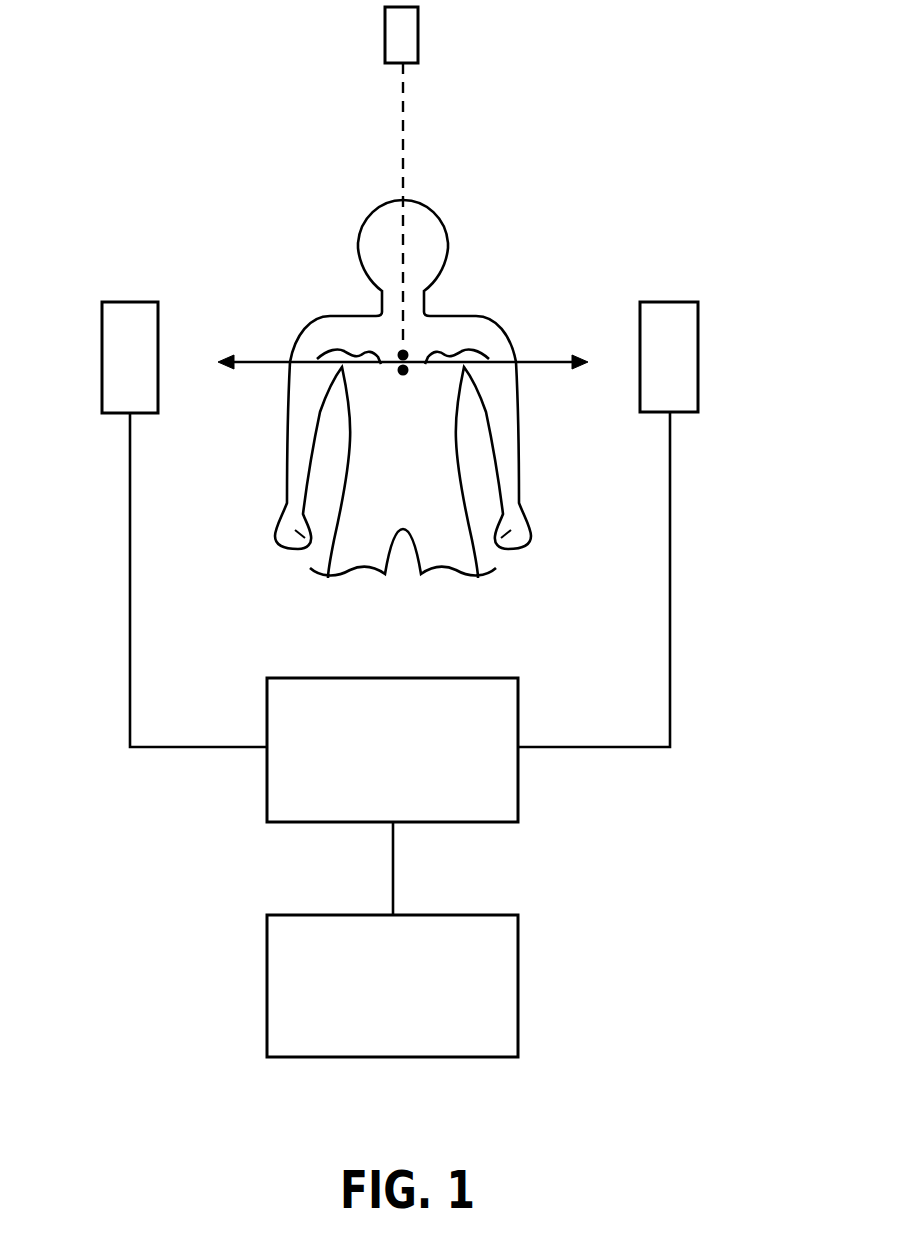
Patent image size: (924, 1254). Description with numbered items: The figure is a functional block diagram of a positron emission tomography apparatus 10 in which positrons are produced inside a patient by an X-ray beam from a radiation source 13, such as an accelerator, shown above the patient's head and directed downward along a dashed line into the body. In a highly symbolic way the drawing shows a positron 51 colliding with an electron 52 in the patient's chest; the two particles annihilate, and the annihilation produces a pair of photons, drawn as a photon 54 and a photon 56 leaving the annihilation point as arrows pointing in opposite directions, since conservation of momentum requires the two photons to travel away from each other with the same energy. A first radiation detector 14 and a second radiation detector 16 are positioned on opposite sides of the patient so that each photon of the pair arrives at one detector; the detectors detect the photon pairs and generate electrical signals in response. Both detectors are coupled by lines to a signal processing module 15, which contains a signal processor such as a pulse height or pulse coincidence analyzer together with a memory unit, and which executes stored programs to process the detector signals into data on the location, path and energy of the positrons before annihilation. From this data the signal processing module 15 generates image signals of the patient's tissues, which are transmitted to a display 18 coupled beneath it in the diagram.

The PET apparatus 10 is at (768, 682).
The radiation source 13 is at (418, 47).
The first radiation detector 14 is at (698, 330).
The signal processing module 15 is at (518, 793).
The second radiation detector 16 is at (101, 348).
The display 18 is at (518, 992).
The positron 51 is at (407, 351).
The electron 52 is at (405, 375).
The photon 54 is at (555, 360).
The photon 56 is at (267, 361).